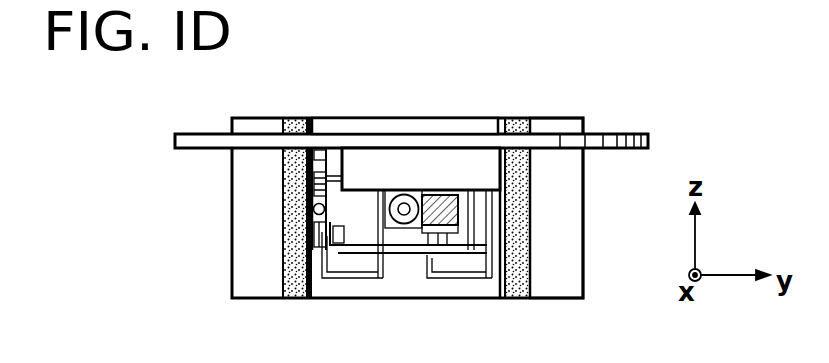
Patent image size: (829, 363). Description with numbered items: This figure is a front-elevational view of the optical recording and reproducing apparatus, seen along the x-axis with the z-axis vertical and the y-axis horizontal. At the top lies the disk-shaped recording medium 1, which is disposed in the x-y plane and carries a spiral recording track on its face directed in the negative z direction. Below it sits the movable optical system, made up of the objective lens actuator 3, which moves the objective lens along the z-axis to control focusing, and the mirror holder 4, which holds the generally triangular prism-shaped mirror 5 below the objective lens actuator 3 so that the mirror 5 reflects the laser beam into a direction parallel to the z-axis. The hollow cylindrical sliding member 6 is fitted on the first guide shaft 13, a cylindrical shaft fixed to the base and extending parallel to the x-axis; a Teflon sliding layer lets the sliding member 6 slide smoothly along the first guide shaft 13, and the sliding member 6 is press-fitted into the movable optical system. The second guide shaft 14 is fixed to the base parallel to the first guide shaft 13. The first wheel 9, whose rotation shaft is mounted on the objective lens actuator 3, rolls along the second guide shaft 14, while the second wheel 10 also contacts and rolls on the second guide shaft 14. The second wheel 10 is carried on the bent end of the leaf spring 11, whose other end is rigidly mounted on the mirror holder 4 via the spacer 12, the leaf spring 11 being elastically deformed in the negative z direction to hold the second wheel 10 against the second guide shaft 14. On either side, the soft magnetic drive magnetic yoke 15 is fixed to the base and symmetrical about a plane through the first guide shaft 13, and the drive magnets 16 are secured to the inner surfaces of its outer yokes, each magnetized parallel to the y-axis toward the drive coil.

The recording medium 1 is at (630, 135).
The objective lens actuator 3 is at (402, 155).
The mirror holder 4 is at (500, 220).
The mirror 5 is at (447, 237).
The sliding member 6 is at (400, 195).
The first wheel 9 is at (308, 181).
The second wheel 10 is at (312, 238).
The leaf spring 11 is at (372, 250).
The spacer 12 is at (460, 243).
The first guide shaft 13 is at (415, 190).
The second guide shaft 14 is at (310, 210).
The drive magnetic yoke 15 is at (568, 118).
The drive magnets 16 is at (291, 118).